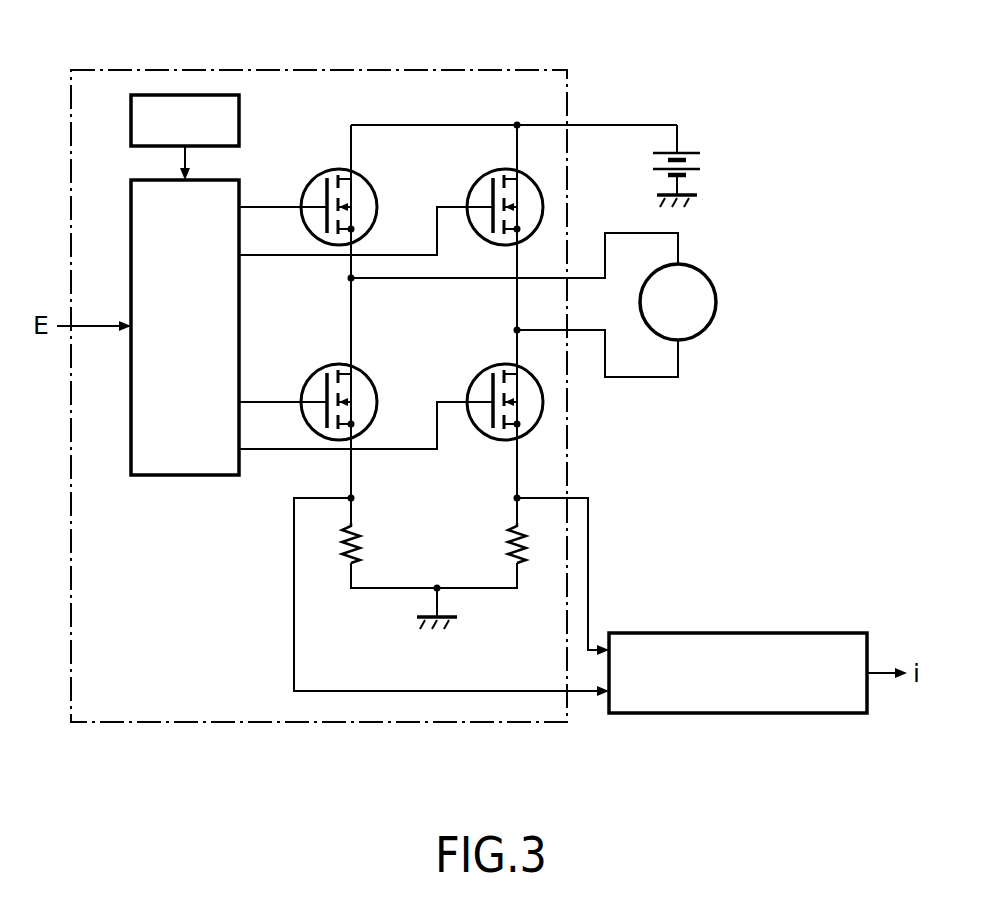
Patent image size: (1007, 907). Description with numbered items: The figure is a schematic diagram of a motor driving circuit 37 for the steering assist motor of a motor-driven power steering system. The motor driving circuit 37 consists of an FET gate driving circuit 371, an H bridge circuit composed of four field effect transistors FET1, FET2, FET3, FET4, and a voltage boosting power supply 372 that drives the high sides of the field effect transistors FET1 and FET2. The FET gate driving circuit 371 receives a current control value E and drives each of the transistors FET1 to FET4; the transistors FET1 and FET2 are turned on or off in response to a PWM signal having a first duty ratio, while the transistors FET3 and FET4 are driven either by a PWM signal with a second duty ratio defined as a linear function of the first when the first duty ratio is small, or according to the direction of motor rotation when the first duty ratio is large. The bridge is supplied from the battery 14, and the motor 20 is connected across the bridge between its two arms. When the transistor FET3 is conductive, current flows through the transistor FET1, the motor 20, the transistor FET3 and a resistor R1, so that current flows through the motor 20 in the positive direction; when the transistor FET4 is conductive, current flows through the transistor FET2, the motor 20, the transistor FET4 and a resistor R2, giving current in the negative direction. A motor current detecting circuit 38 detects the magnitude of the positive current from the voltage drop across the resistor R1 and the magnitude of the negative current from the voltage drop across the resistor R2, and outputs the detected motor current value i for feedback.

The motor driving circuit 37 is at (386, 70).
The FET gate driving circuit 371 is at (139, 180).
The voltage boosting power supply 372 is at (239, 100).
The battery 14 is at (696, 152).
The motor 20 is at (704, 270).
The motor current detecting circuit 38 is at (738, 633).
The field effect transistor FET1 is at (324, 191).
The field effect transistor FET2 is at (488, 191).
The field effect transistor FET3 is at (488, 386).
The field effect transistor FET4 is at (324, 386).
The resistor R1 is at (536, 543).
The resistor R2 is at (371, 543).